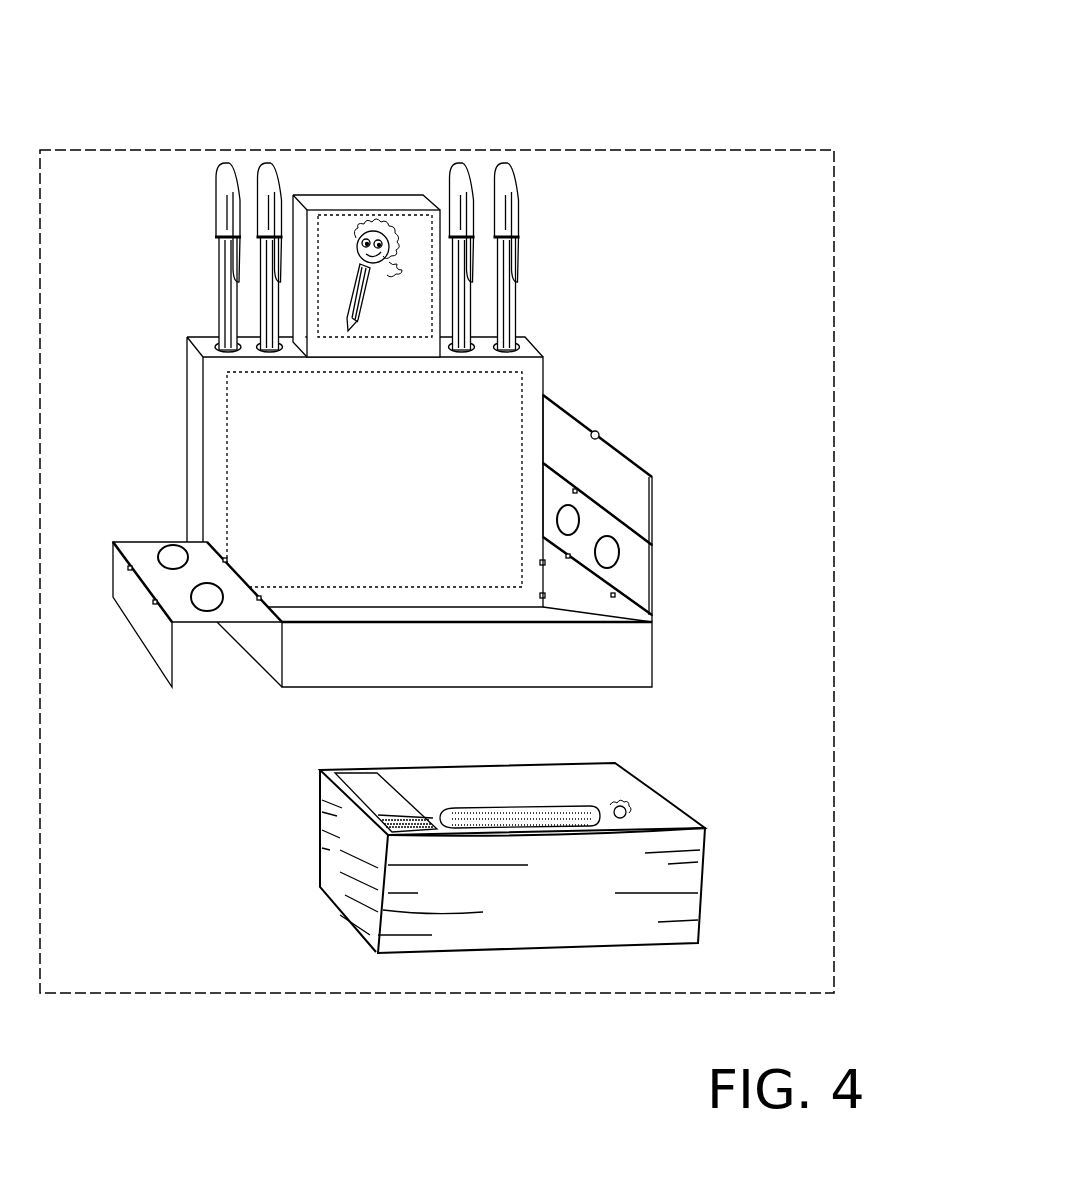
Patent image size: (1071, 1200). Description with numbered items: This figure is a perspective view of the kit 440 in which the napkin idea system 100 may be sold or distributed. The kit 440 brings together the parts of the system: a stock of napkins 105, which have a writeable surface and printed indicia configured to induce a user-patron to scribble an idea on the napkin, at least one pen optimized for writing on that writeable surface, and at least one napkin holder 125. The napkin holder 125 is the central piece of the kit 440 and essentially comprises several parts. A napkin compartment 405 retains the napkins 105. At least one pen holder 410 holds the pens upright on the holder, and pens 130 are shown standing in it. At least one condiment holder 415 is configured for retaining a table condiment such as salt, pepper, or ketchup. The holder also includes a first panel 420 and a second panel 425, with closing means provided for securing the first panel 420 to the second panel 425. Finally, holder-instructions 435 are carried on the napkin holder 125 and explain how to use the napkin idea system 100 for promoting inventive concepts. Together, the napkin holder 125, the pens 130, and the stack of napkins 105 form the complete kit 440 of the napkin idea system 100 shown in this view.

The napkin idea system 100 is at (619, 78).
The kit 440 is at (366, 138).
The pen holder 410 is at (527, 347).
The napkin holder 125 is at (220, 450).
The holder-instructions 435 is at (325, 335).
The writing instruments 130 is at (220, 193).
The condiment holder 415 is at (173, 558).
The napkin compartment 405 is at (598, 608).
The first panel 420 is at (632, 487).
The second panel 425 is at (633, 572).
The napkins 105 is at (418, 787).